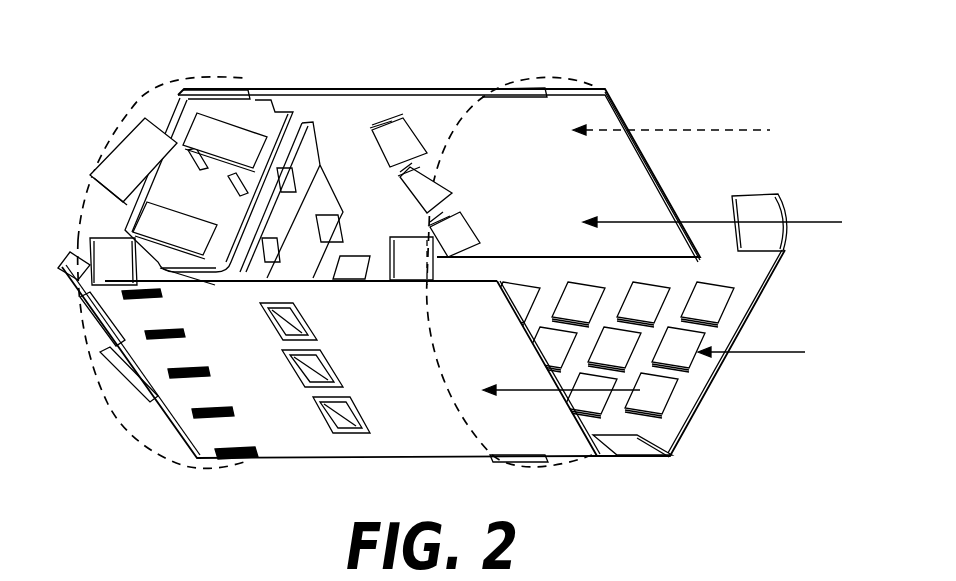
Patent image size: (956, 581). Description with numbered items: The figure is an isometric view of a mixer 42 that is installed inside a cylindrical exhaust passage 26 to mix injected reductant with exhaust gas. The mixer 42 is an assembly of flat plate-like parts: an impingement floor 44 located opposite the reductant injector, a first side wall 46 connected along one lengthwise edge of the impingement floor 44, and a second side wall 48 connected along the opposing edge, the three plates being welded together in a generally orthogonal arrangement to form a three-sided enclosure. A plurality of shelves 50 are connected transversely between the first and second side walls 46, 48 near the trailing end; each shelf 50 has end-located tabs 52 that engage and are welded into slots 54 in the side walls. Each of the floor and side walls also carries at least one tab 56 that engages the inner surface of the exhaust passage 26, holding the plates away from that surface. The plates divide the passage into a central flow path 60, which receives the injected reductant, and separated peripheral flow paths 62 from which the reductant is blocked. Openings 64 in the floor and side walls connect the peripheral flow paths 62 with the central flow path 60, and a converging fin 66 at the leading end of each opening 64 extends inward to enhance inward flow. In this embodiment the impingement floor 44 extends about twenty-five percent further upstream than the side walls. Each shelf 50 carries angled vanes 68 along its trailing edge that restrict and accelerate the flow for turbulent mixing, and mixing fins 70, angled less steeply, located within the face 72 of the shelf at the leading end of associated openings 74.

The exhaust passage 26 is at (150, 95).
The mixer 42 is at (714, 100).
The impingement floor 44 is at (687, 433).
The first side wall 46 is at (400, 438).
The second side wall 48 is at (614, 99).
The shelves 50 is at (293, 128).
The tabs 52 is at (158, 294).
The slots 54 is at (97, 303).
The tab 56 is at (217, 90).
The central flow path 60 is at (818, 222).
The peripheral flow paths 62 is at (725, 131).
The openings 64 is at (330, 204).
The converging fin 66 is at (405, 141).
The vanes 68 is at (112, 140).
The mixing fins 70 is at (247, 135).
The face 72 is at (302, 100).
The openings 74 is at (186, 168).